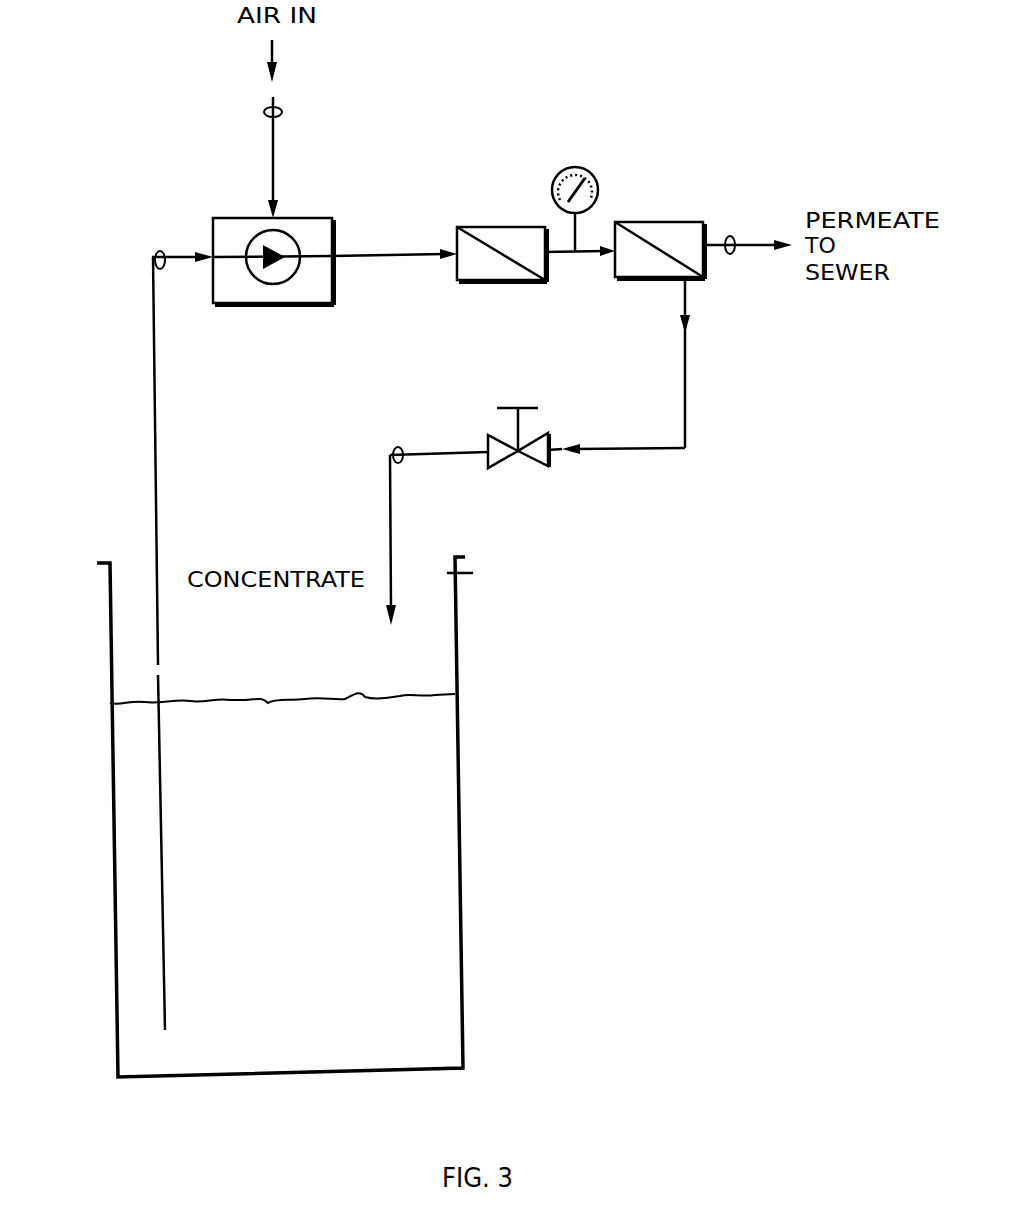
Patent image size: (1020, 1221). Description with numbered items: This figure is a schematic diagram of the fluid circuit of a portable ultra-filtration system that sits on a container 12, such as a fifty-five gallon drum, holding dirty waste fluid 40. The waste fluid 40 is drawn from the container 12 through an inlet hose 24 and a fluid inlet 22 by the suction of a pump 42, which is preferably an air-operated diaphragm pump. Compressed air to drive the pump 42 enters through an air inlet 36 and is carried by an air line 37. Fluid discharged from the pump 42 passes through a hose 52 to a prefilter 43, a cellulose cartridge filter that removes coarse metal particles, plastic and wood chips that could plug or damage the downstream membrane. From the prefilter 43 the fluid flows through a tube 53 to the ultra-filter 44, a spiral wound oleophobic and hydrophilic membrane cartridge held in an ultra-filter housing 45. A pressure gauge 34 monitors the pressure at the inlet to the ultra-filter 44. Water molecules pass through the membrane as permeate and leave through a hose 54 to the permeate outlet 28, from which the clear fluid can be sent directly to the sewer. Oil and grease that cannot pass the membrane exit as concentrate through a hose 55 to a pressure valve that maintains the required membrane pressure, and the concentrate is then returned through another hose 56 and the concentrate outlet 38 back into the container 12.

The container 12 is at (110, 775).
The fluid inlet 22 is at (160, 252).
The inlet hose 24 is at (158, 428).
The permeate outlet 28 is at (733, 234).
The pressure gauge 34 is at (576, 167).
The air inlet 36 is at (284, 110).
The air line 37 is at (274, 152).
The concentrate outlet 38 is at (398, 447).
The dirty waste fluid 40 is at (320, 851).
The pump 42 is at (292, 292).
The prefilter 43 is at (505, 227).
The ultra-filter 44 is at (668, 222).
The ultra-filter housing 45 is at (538, 468).
The hose 52 is at (375, 252).
The tube 53 is at (573, 253).
The hose 54 is at (717, 240).
The hose 55 is at (685, 369).
The hose 56 is at (465, 457).